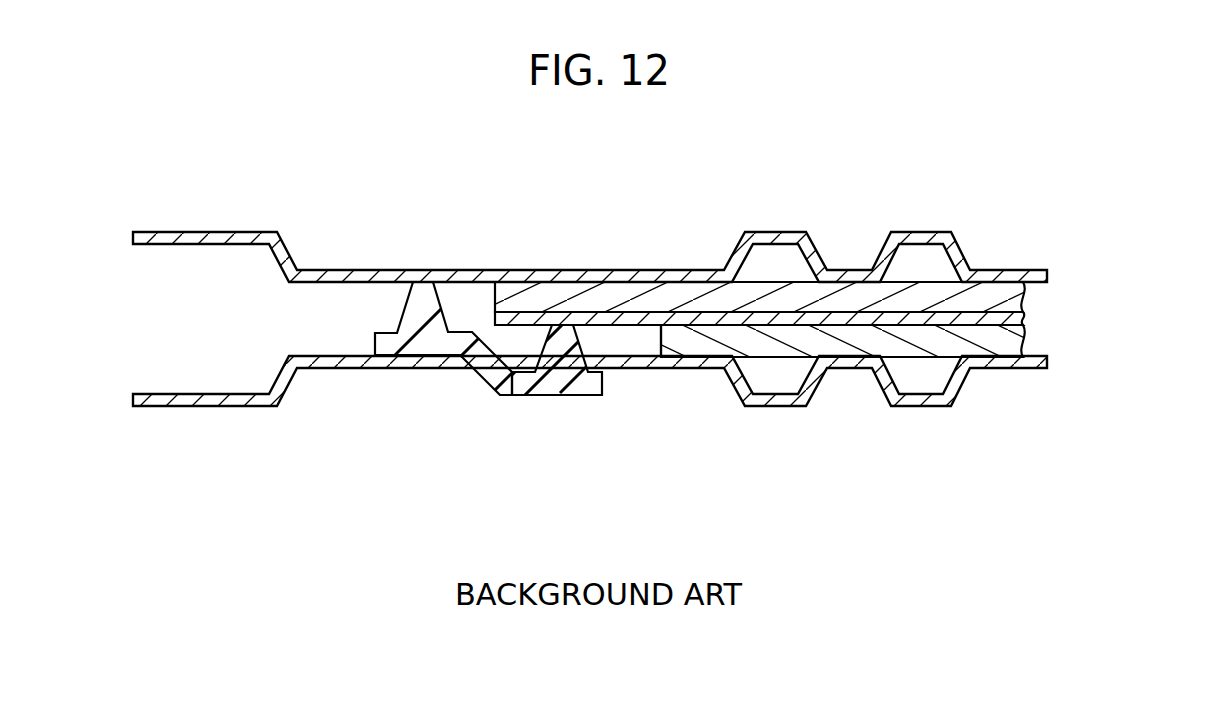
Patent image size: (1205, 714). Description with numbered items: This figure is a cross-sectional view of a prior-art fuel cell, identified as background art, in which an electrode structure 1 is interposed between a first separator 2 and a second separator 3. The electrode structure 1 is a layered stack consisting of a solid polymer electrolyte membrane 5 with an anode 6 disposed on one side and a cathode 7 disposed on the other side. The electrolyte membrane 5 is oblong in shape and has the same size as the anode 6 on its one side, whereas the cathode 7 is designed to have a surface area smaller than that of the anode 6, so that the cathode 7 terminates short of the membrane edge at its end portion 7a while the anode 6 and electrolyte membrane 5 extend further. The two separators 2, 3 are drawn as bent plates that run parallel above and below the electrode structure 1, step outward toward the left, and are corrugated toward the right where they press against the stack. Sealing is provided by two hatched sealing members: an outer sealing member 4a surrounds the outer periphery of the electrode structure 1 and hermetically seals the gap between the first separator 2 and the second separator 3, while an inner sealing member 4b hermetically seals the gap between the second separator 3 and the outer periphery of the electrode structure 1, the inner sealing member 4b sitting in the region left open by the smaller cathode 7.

The electrode structure 1 is at (810, 351).
The first separator 2 is at (178, 232).
The second separator 3 is at (187, 397).
The outer sealing member 4a is at (420, 302).
The inner sealing member 4b is at (562, 344).
The solid polymer electrolyte membrane 5 is at (1013, 318).
The anode 6 is at (1012, 295).
The cathode 7 is at (1012, 348).
The end face of lower resin layer 7a is at (702, 345).